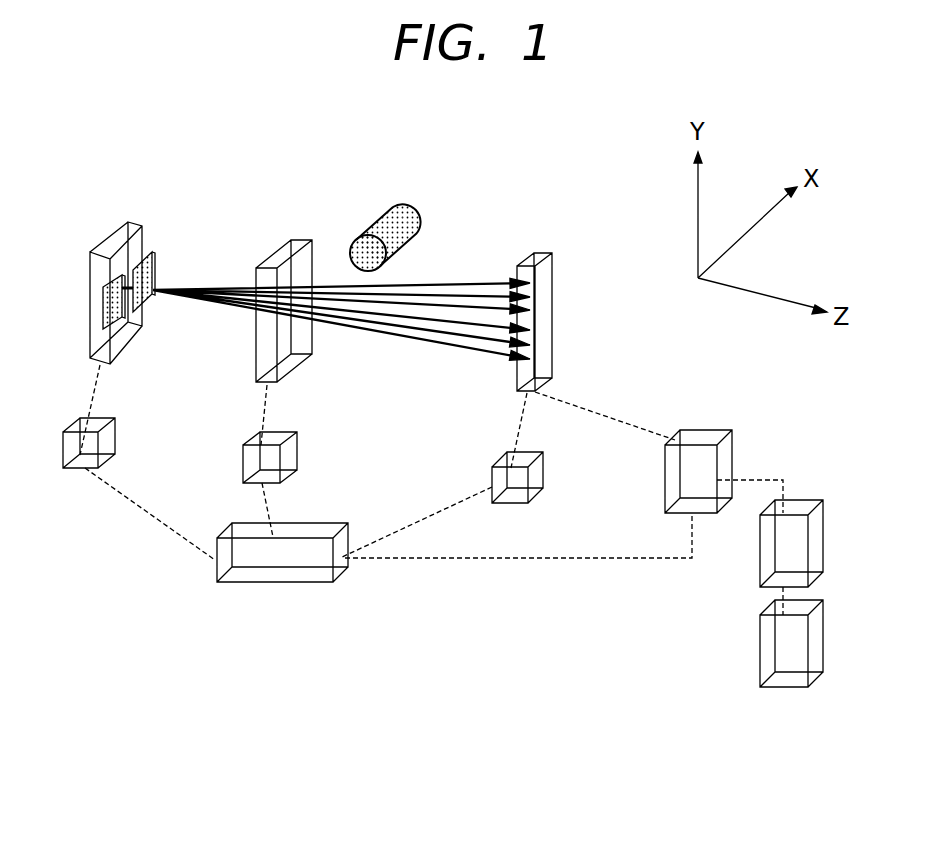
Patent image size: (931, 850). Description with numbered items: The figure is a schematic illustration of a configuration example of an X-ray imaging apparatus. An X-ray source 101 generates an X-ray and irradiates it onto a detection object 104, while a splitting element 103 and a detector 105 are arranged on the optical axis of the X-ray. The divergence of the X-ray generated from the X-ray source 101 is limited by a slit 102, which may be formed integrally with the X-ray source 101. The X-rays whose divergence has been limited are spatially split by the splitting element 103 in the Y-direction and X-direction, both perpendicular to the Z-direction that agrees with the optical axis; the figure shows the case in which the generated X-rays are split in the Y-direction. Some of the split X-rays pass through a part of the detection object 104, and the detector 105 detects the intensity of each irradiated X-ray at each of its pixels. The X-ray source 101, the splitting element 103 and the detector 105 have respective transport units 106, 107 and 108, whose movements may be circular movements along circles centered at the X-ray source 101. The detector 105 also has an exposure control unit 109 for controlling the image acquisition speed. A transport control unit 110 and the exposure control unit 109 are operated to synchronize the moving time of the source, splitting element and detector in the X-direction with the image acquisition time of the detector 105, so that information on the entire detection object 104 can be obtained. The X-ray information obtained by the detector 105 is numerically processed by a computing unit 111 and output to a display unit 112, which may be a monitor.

The X-ray source 101 is at (103, 243).
The slit 102 is at (148, 250).
The splitting element 103 is at (282, 250).
The detection object 104 is at (389, 196).
The detector 105 is at (525, 262).
The transport unit 106 is at (73, 470).
The transport unit 107 is at (291, 452).
The transport unit 108 is at (538, 473).
The exposure control unit 109 is at (700, 432).
The transport control unit 110 is at (272, 584).
The computing unit 111 is at (763, 550).
The display unit 112 is at (763, 650).